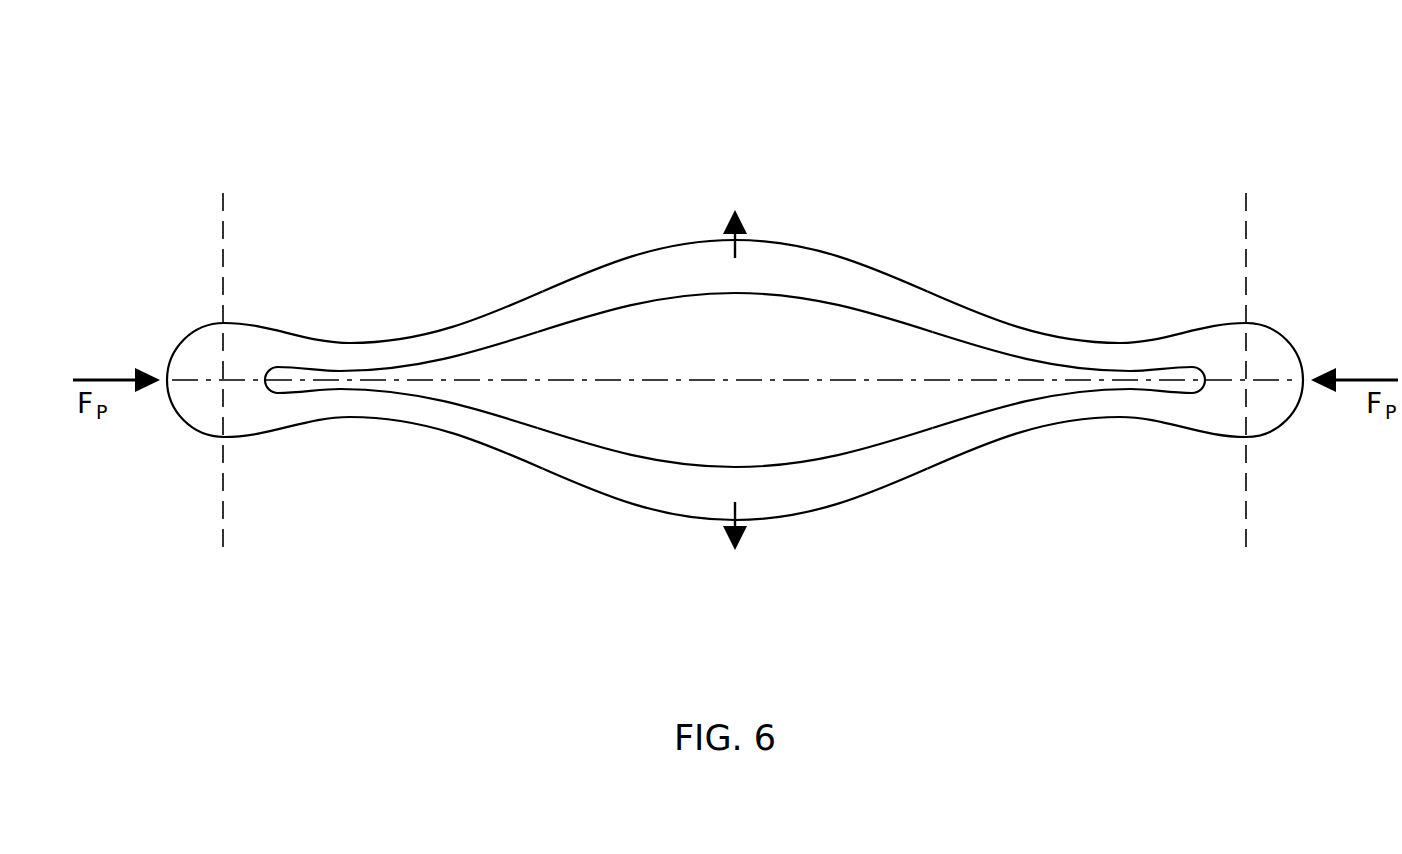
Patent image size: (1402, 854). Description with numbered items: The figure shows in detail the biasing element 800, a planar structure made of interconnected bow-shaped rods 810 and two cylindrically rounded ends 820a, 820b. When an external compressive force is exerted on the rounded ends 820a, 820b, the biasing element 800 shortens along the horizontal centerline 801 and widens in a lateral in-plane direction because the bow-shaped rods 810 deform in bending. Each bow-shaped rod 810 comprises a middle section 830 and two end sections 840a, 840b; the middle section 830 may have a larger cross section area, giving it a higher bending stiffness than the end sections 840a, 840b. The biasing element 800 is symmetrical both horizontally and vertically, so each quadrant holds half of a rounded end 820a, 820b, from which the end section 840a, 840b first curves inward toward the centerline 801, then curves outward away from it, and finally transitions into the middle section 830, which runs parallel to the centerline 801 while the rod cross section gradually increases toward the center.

The biasing element 800 is at (311, 122).
The centerline 801 is at (733, 380).
The bow-shaped rods 810 is at (223, 193).
The rounded end 820a is at (193, 332).
The rounded end 820b is at (1277, 332).
The middle section 830 is at (543, 443).
The end section 840a is at (223, 548).
The end section 840b is at (926, 548).